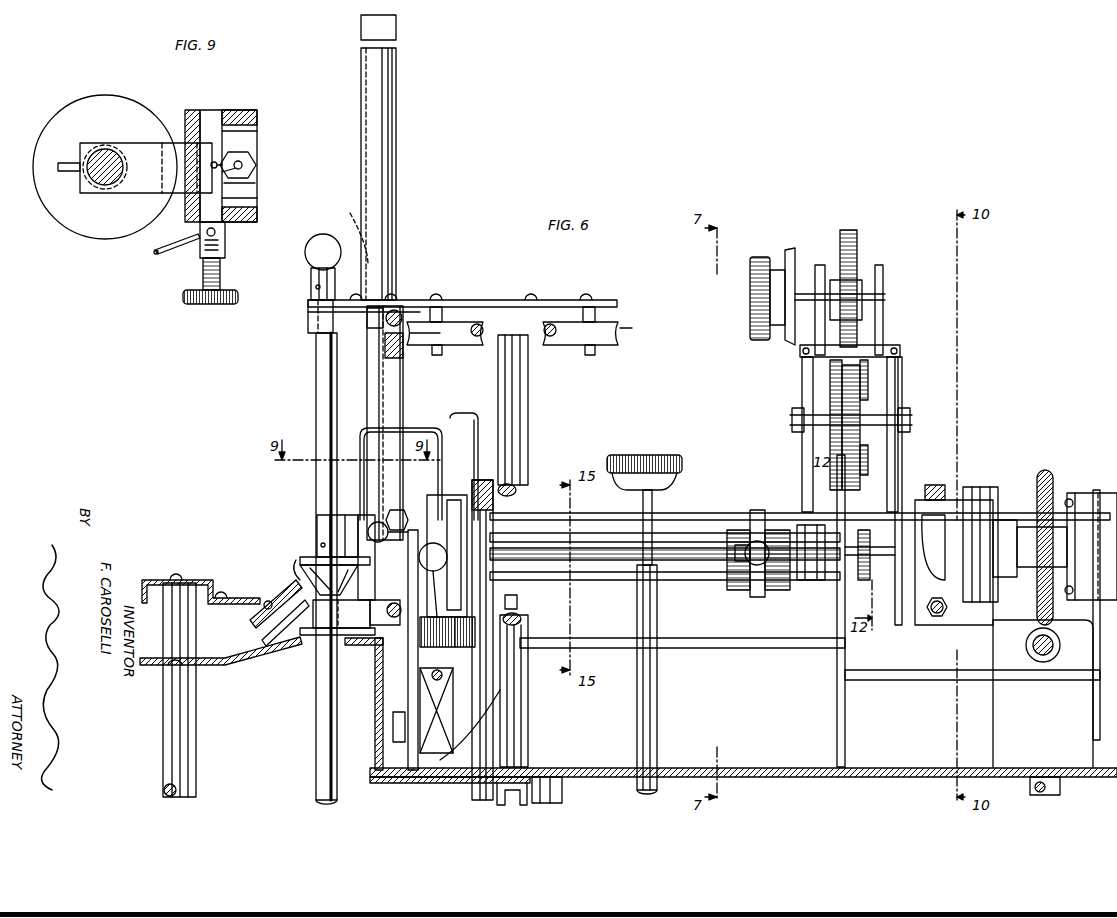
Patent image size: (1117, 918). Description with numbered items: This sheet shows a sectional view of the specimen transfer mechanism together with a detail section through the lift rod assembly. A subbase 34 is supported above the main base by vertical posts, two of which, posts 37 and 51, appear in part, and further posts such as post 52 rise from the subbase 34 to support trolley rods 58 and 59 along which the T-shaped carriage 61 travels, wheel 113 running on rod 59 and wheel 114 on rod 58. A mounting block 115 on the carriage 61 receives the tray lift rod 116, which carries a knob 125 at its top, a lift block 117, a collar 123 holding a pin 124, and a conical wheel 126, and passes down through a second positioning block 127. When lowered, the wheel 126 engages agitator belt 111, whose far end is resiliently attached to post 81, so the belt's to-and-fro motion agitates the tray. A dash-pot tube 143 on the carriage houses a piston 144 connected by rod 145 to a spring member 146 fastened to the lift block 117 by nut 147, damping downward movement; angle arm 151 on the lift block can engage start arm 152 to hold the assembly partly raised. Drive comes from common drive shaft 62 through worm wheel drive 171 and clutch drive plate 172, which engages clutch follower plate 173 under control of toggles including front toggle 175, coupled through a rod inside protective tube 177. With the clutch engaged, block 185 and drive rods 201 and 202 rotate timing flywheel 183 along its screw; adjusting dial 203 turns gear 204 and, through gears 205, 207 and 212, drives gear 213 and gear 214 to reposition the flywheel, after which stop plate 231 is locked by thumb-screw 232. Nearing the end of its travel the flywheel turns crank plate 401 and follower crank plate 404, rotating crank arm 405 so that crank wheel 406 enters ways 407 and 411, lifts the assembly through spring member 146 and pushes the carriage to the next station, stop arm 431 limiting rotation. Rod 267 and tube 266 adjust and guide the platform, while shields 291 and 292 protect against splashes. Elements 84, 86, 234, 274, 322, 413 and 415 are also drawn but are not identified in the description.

In FIG. 9, the conical wheel 126 is at (99, 96).
In FIG. 9, the lift rod 116 is at (95, 150).
In FIG. 6, the lift rod 116 is at (316, 364).
In FIG. 9, the lift block 117 is at (131, 147).
In FIG. 6, the lift block 117 is at (318, 520).
In FIG. 9, the holding pin 124 is at (60, 168).
In FIG. 6, the holding pin 124 is at (316, 535).
In FIG. 9, the way 407 is at (240, 112).
In FIG. 9, the nut 147 is at (250, 163).
In FIG. 6, the nut 147 is at (394, 508).
In FIG. 9, the rod 145 is at (240, 170).
In FIG. 6, the rod 145 is at (379, 382).
In FIG. 9, the spring member 146 is at (245, 192).
In FIG. 6, the spring member 146 is at (396, 510).
In FIG. 9, the way 411 is at (236, 222).
In FIG. 6, the way 411 is at (390, 396).
In FIG. 9, the angle arm 151 is at (157, 252).
In FIG. 6, the angle arm 151 is at (408, 428).
In FIG. 9, the knob 322 is at (208, 305).
In FIG. 6, the knob 322 is at (372, 522).
In FIG. 6, the dash-pot tube 143 is at (397, 95).
In FIG. 6, the piston 144 is at (349, 213).
In FIG. 6, the knob 125 is at (312, 250).
In FIG. 6, the carriage 61 is at (476, 303).
In FIG. 6, the mounting block 115 is at (308, 320).
In FIG. 6, the trolley wheel 114 is at (415, 345).
In FIG. 6, the trolley rod 58 is at (470, 347).
In FIG. 6, the trolley rod 59 is at (547, 347).
In FIG. 6, the trolley wheel 113 is at (620, 336).
In FIG. 6, the post 52 is at (526, 398).
In FIG. 6, the start arm 152 is at (454, 416).
In FIG. 6, the front toggle 175 is at (440, 512).
In FIG. 6, the follower crank plate 404 is at (512, 610).
In FIG. 6, the crank plate 401 is at (522, 590).
In FIG. 6, the drive rod 201 is at (666, 516).
In FIG. 6, the drive rod 202 is at (663, 562).
In FIG. 6, the protective tube 177 is at (573, 580).
In FIG. 6, the knob 274 is at (630, 455).
In FIG. 6, the rod 267 is at (643, 504).
In FIG. 6, the tube 266 is at (656, 703).
In FIG. 6, the thumb-screw 232 is at (775, 520).
In FIG. 6, the timing flywheel 183 is at (735, 590).
In FIG. 6, the stop plate 231 is at (760, 590).
In FIG. 6, the block 185 is at (805, 582).
In FIG. 6, the gear 213 is at (870, 575).
In FIG. 6, the subbase 34 is at (738, 768).
In FIG. 6, the foot 234 is at (497, 795).
In FIG. 6, the post 51 is at (562, 790).
In FIG. 6, the post 37 is at (1060, 782).
In FIG. 6, the adjusting dial 203 is at (788, 262).
In FIG. 6, the gear 204 is at (850, 230).
In FIG. 6, the gear 207 is at (830, 378).
In FIG. 6, the gear 205 is at (862, 395).
In FIG. 6, the gear 214 is at (866, 378).
In FIG. 6, the gear 212 is at (875, 470).
In FIG. 6, the clutch follower plate 173 is at (972, 487).
In FIG. 6, the clutch drive plate 172 is at (990, 487).
In FIG. 6, the worm wheel drive 171 is at (1046, 470).
In FIG. 6, the drive shaft 62 is at (1026, 640).
In FIG. 6, the collar 123 is at (316, 540).
In FIG. 6, the agitator belt 111 is at (300, 572).
In FIG. 6, the positioning block 127 is at (326, 612).
In FIG. 6, the plate 86 is at (260, 620).
In FIG. 6, the bracket 84 is at (198, 580).
In FIG. 6, the post 81 is at (196, 708).
In FIG. 6, the shield 292 is at (298, 645).
In FIG. 6, the shield 291 is at (375, 718).
In FIG. 6, the crank arm 405 is at (410, 632).
In FIG. 6, the crank wheel 406 is at (396, 718).
In FIG. 6, the bracket 413 is at (440, 695).
In FIG. 6, the coil 415 is at (430, 640).
In FIG. 6, the stop arm 431 is at (458, 640).